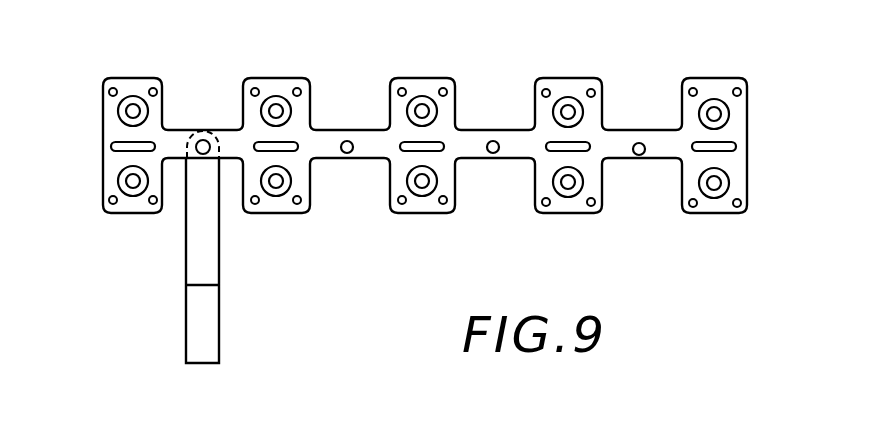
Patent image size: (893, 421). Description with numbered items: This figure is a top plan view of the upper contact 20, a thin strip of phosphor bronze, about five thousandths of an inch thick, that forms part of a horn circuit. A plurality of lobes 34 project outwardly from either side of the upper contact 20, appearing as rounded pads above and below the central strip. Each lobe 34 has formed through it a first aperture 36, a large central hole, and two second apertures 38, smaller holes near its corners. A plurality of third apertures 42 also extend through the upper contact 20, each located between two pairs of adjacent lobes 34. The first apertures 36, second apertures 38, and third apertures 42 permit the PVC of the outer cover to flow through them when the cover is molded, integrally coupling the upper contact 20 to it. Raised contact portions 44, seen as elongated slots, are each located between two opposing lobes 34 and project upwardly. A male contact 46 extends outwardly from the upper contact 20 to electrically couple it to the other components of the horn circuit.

The upper contact 20 is at (748, 128).
The lobe 34 is at (137, 77).
The first aperture 36 is at (120, 110).
The second aperture 38 is at (112, 85).
The third aperture 42 is at (347, 153).
The raised contact portion 44 is at (111, 146).
The male contact 46 is at (176, 247).